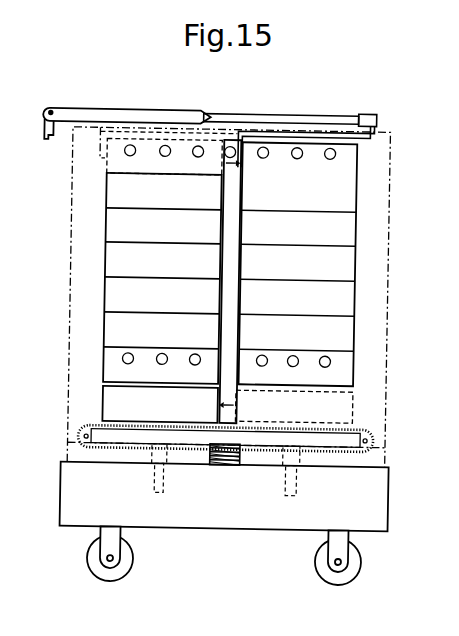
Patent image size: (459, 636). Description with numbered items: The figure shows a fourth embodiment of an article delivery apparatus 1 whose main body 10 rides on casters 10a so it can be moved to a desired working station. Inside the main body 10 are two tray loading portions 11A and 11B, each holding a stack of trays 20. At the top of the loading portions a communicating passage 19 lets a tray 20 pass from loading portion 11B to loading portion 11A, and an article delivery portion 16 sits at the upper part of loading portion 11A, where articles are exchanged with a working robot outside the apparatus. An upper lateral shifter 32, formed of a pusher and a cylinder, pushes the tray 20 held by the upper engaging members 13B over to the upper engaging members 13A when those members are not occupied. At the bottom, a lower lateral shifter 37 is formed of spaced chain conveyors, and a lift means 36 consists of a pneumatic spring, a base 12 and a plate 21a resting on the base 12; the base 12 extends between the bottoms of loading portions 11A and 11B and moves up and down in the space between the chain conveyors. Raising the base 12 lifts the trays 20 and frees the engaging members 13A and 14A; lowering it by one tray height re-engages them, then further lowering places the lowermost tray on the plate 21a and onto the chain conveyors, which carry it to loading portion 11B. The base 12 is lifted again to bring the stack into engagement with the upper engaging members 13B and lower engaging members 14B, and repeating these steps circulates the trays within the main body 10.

The article delivery apparatus 1 is at (389, 318).
The main body 10 is at (392, 157).
The casters 10a is at (128, 566).
The tray loading portion 11A is at (372, 277).
The tray loading portion 11B is at (83, 262).
The base 12 is at (190, 437).
The upper engaging members 13A is at (336, 157).
The upper engaging members 13B is at (126, 154).
The lower engaging members 14A is at (332, 363).
The lower engaging members 14B is at (122, 358).
The article delivery portion 16 is at (314, 140).
The communicating passage 19 is at (231, 170).
The trays 20 is at (347, 233).
The plate 21a is at (110, 417).
The upper lateral shifter 32 is at (173, 113).
The lift means 36 is at (243, 466).
The lower lateral shifter 37 is at (370, 430).